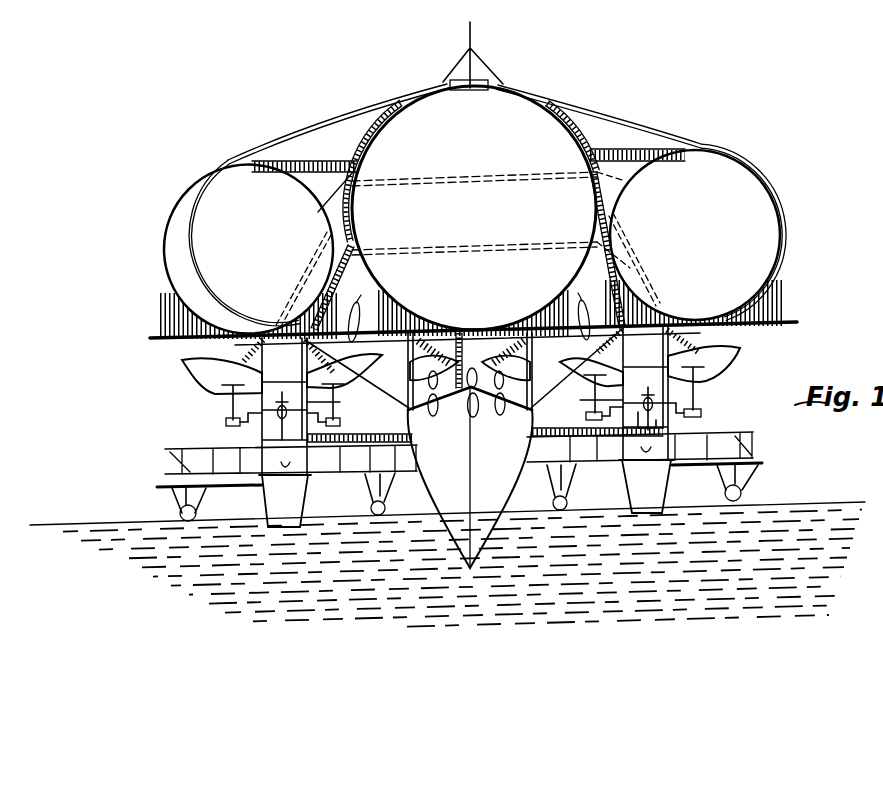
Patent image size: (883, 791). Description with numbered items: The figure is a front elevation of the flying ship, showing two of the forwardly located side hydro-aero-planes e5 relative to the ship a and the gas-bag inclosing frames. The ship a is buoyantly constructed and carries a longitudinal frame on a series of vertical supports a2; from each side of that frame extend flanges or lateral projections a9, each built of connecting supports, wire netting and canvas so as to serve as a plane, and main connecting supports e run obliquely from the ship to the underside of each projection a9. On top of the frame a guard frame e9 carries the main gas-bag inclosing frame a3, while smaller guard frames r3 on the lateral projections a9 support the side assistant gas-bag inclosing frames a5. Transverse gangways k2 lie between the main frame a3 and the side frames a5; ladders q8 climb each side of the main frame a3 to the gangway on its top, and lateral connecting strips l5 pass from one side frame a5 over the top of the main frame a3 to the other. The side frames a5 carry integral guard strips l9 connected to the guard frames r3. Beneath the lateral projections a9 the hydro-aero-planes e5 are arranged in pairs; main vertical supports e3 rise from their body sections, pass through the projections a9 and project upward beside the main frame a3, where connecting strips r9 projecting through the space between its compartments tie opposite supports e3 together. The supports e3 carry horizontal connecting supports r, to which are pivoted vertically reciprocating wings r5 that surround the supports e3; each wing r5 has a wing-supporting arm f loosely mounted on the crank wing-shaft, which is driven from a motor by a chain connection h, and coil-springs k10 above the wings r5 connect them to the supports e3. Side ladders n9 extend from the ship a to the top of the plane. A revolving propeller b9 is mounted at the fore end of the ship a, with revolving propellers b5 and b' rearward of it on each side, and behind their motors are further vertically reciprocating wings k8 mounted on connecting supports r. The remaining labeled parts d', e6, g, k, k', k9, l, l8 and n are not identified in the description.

The ship a is at (470, 477).
The vertical supports a2 is at (545, 380).
The main gas-bag inclosing frame a3 is at (474, 208).
The side assistant gas-bag enclosing frames a5 is at (472, 242).
The lateral projections a9 is at (470, 326).
The revolving propeller b5 is at (437, 417).
The revolving propeller b9 is at (475, 418).
The revolving propeller b' is at (509, 401).
The inner wing plane d' is at (465, 363).
The main connecting supports e is at (465, 397).
The main vertical supports e3 is at (530, 371).
The hydro-aero-planes e5 is at (168, 450).
The float e6 is at (298, 480).
The main gas-balloon inclosing frame supporting guard frame e9 is at (472, 310).
The wing-supporting arm f is at (226, 405).
The hatched girder g is at (303, 437).
The chain connection h is at (465, 404).
The outer wheel k is at (453, 493).
The inner wheel k' is at (470, 489).
The transverse gang ways k2 is at (344, 160).
The vertically reciprocating wings k8 is at (538, 355).
The ladder brace k9 is at (471, 221).
The coil-springs k10 is at (243, 352).
The pipe l is at (224, 423).
The lateral connecting strips l5 is at (563, 105).
The mast cap l8 is at (452, 84).
The integral guard strips l9 is at (340, 196).
The bracket n is at (640, 416).
The side ladders n9 is at (418, 372).
The ladders q8 is at (392, 107).
The connecting supports r is at (465, 400).
The gas balloon inclosing frame supporting guard frames r3 is at (170, 306).
The vertically reciprocating wings r5 is at (180, 366).
The connecting strips r9 is at (473, 186).